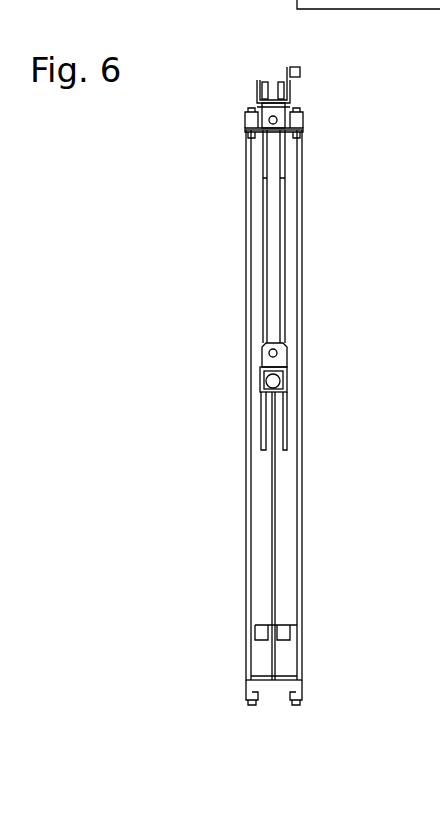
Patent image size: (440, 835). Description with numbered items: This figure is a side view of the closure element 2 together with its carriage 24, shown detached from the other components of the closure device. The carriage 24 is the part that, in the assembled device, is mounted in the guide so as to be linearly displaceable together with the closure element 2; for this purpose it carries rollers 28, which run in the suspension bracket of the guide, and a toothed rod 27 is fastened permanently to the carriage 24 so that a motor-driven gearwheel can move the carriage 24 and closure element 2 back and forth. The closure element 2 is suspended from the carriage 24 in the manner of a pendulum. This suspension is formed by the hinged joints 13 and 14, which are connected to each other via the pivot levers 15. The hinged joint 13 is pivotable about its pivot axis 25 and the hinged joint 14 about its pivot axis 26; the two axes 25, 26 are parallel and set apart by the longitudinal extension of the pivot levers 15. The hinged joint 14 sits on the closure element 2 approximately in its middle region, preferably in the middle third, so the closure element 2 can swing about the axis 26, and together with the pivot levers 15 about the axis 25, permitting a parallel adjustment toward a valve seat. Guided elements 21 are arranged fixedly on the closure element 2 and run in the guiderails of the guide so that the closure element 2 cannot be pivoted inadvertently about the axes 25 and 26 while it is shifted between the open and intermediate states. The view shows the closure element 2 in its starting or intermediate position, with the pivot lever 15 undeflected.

The closure element 2 is at (286, 530).
The hinged joint 13 is at (257, 132).
The hinged joint 14 is at (298, 358).
The pivot lever 15 is at (271, 222).
The guided element 21 is at (246, 121).
The carriage 24 is at (287, 101).
The pivot axis 25 is at (276, 124).
The pivot axis 26 is at (270, 353).
The toothed rod 27 is at (300, 72).
The roller 28 is at (280, 83).